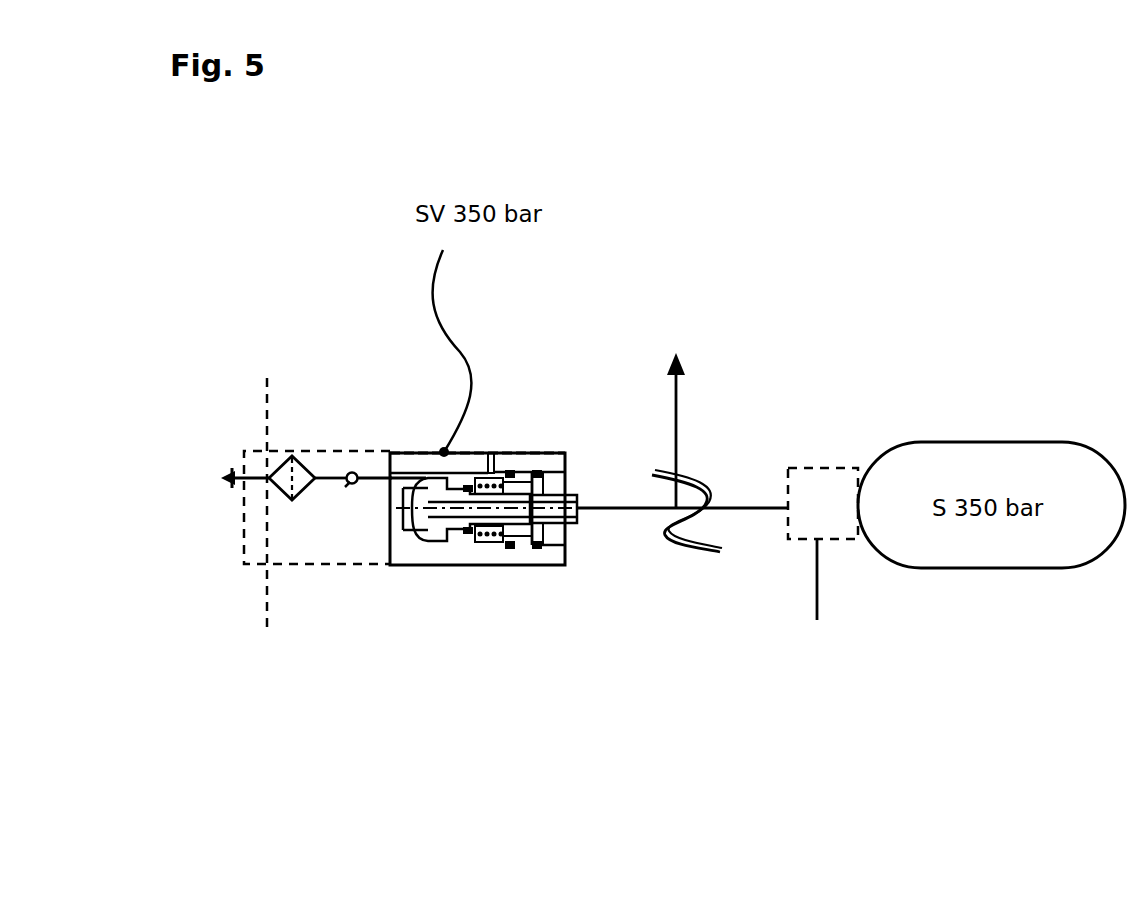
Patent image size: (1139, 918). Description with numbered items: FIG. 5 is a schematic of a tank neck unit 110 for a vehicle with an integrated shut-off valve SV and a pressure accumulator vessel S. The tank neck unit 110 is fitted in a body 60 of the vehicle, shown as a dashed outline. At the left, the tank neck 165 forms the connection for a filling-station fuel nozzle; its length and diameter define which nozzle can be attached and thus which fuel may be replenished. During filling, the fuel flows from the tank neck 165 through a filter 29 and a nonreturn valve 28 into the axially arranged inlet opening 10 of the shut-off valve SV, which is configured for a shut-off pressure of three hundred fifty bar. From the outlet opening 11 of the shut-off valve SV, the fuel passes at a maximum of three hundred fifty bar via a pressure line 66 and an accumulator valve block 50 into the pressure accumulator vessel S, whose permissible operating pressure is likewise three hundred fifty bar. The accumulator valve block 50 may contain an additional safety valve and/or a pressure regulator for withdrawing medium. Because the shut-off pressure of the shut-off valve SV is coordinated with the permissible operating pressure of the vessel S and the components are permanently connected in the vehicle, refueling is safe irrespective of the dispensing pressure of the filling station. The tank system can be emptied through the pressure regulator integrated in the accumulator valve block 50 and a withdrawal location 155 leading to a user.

The inlet opening 10 is at (383, 480).
The outlet opening 11 is at (560, 507).
The nonreturn valve 28 is at (355, 463).
The filter 29 is at (307, 467).
The accumulator valve block 50 is at (817, 467).
The body 60 is at (267, 607).
The pressure line 66 is at (623, 513).
The tank neck unit 110 is at (348, 568).
The withdrawal location 155 is at (817, 620).
The tank neck 165 is at (226, 478).